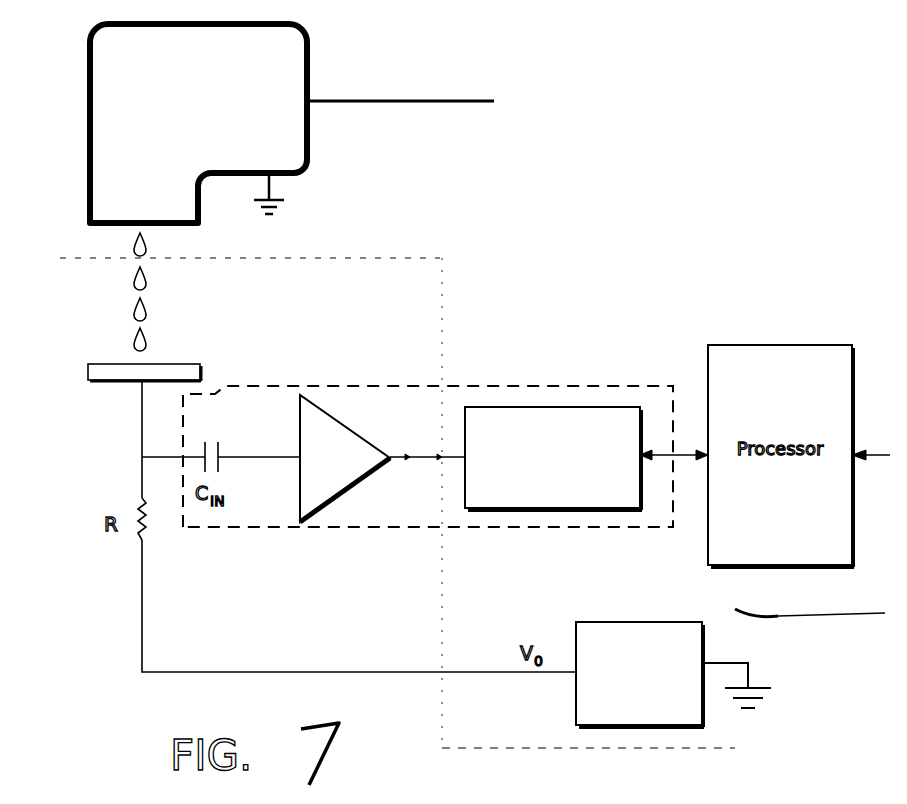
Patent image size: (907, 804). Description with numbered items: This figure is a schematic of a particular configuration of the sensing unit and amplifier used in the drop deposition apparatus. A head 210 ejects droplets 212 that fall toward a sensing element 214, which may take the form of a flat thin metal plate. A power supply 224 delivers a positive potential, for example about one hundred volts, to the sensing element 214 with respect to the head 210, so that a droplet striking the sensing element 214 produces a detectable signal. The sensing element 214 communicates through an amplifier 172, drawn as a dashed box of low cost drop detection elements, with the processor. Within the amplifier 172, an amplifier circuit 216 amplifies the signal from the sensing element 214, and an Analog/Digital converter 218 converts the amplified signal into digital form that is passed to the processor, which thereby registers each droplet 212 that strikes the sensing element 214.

The head 210 is at (185, 129).
The ink drops 212 is at (147, 279).
The sensing element 214 is at (201, 372).
The amplifier circuit 216 is at (340, 468).
The Analog/Digital converter 218 is at (566, 495).
The power supply 224 is at (642, 712).
The amplifier 172 is at (533, 381).